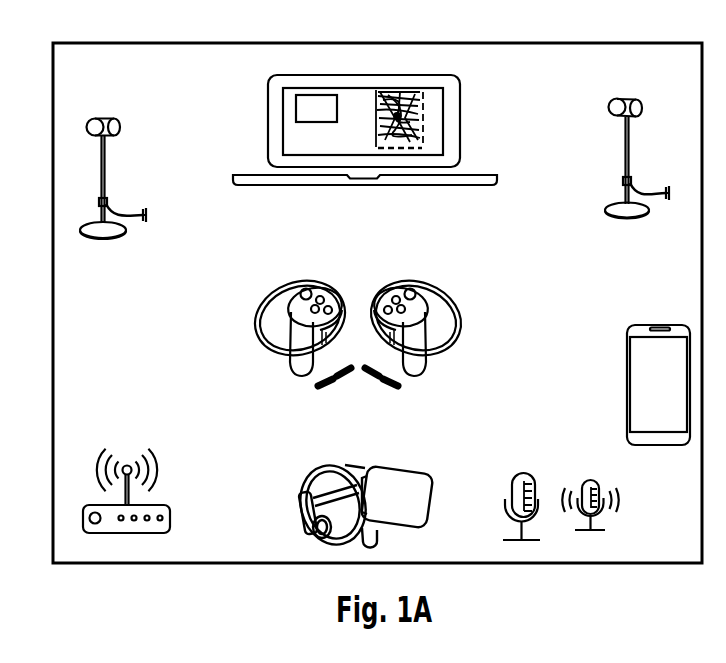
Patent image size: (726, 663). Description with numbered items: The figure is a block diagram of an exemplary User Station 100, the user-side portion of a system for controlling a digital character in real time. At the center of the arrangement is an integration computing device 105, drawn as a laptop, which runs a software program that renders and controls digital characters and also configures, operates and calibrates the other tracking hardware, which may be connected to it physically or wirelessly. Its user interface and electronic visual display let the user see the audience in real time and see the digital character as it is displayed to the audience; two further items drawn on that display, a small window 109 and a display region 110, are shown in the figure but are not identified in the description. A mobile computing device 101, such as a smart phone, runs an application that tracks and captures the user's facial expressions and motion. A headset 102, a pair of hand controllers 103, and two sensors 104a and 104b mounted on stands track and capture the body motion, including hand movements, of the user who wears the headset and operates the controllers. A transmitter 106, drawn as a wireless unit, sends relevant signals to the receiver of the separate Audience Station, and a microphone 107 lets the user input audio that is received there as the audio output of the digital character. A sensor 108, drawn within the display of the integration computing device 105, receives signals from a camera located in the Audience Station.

The User Station 100 is at (118, 43).
The mobile computing device 101 is at (627, 378).
The headset 102 is at (310, 494).
The controllers 103 is at (258, 300).
The sensor 104a is at (108, 165).
The sensor 104b is at (624, 155).
The integration computing device 105 is at (462, 86).
The transmitter 106 is at (128, 466).
The microphone 107 is at (514, 478).
The sensor 108 is at (423, 144).
The window 109 is at (300, 106).
The display screen 110 is at (298, 139).